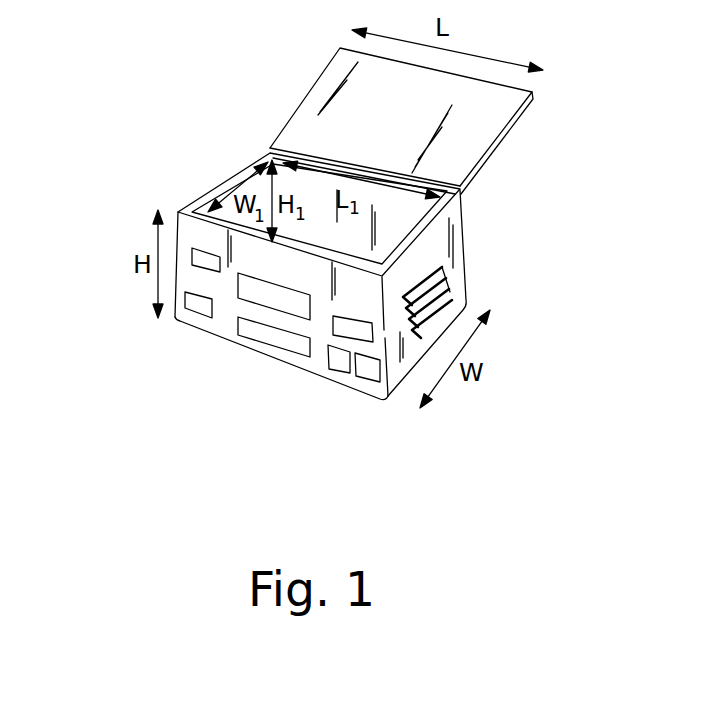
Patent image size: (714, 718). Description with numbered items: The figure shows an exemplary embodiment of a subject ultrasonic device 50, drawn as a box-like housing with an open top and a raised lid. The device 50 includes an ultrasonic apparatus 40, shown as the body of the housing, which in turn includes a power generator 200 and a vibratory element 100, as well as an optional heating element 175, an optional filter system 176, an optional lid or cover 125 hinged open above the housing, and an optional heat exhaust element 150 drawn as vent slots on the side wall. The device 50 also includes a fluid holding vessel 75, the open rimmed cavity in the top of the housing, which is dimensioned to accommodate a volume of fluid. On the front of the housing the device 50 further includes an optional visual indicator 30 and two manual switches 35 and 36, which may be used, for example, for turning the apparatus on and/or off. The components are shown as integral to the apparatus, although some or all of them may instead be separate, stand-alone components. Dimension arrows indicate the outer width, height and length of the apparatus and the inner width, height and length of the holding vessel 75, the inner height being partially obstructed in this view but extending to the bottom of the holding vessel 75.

The device 50 is at (122, 145).
The visual indicator 30 is at (378, 332).
The ultrasonic apparatus 40 is at (463, 217).
The fluid holding vessel 75 is at (265, 163).
The lid or cover 125 is at (522, 122).
The heat exhaust element 150 is at (448, 283).
The heating element 175 is at (198, 246).
The filter system 176 is at (200, 313).
The power generator 200 is at (263, 340).
The vibratory element 100 is at (330, 362).
The manual switch 35 is at (340, 374).
The manual switch 36 is at (370, 382).